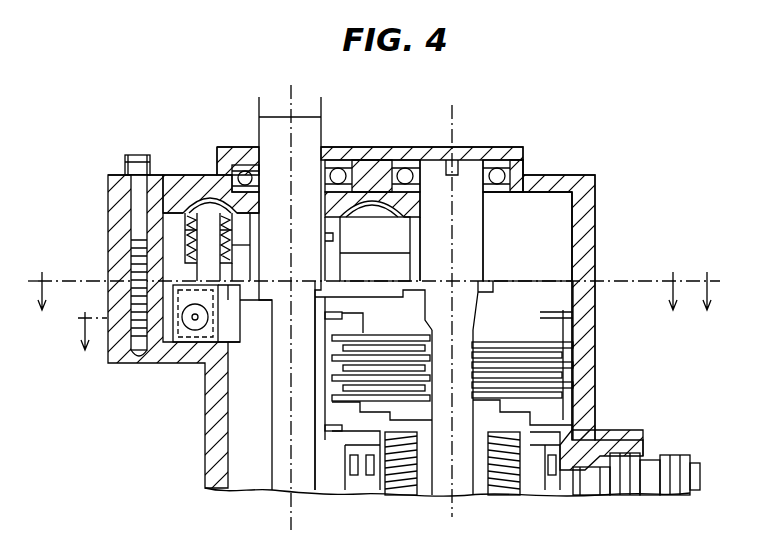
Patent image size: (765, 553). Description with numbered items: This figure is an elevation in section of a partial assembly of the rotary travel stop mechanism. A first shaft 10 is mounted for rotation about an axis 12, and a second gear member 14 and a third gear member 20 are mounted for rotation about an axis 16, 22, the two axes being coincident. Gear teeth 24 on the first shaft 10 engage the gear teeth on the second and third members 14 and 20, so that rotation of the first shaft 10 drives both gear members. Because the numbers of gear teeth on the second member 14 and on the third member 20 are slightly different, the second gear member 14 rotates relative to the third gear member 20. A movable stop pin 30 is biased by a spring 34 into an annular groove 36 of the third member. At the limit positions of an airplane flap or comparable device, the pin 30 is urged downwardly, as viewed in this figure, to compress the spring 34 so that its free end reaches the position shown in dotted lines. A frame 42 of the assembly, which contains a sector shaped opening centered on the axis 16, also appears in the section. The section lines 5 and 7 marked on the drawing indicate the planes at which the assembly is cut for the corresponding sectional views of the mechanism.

The first shaft 10 is at (470, 236).
The axis 12 is at (458, 116).
The second gear member 14 is at (358, 260).
The axis 16 is at (289, 94).
The third gear member 20 is at (338, 198).
The axis 22 is at (296, 102).
The gear teeth 24 is at (496, 250).
The movable stop pin 30 is at (212, 262).
The spring 34 is at (236, 228).
The annular groove 36 is at (195, 178).
The frame 42 is at (126, 358).
The section line 5 is at (352, 297).
The section line 7 is at (394, 317).